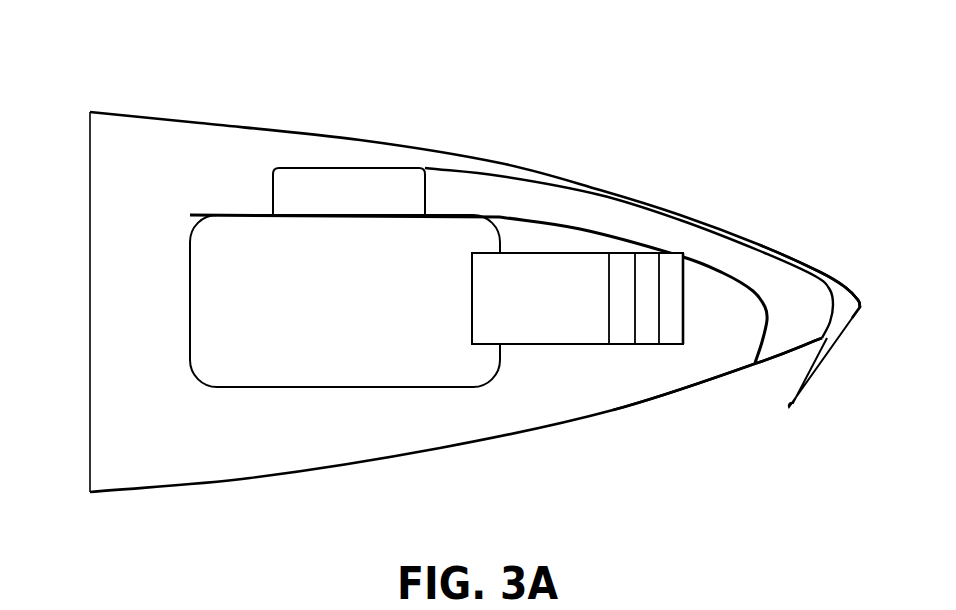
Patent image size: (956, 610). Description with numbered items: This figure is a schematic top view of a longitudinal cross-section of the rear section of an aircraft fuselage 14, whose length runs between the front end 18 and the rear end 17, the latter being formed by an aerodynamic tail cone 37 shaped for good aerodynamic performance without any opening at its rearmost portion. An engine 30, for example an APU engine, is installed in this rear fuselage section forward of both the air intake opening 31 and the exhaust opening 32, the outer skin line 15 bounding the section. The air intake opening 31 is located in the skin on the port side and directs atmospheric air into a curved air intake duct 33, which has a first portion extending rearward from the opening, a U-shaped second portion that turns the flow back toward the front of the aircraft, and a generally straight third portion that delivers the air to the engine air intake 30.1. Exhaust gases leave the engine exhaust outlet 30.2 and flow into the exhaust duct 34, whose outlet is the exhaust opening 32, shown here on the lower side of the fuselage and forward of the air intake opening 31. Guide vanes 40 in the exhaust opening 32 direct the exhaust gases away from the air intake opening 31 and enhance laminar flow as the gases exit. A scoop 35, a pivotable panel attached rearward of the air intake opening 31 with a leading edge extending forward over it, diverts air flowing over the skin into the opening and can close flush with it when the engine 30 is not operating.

The fuselage 14 is at (206, 148).
The outer skin upper surface 15 is at (345, 130).
The rear end 17 is at (862, 318).
The front end 18 is at (87, 497).
The engine 30 is at (417, 275).
The engine air intake 30.1 is at (331, 207).
The engine exhaust outlet 30.2 is at (478, 274).
The air intake opening 31 is at (768, 368).
The exhaust opening 32 is at (650, 268).
The air intake duct 33 is at (733, 257).
The exhaust duct 34 is at (620, 265).
The scoop 35 is at (803, 393).
The tail cone 37 is at (827, 267).
The guide vanes 40 is at (677, 253).